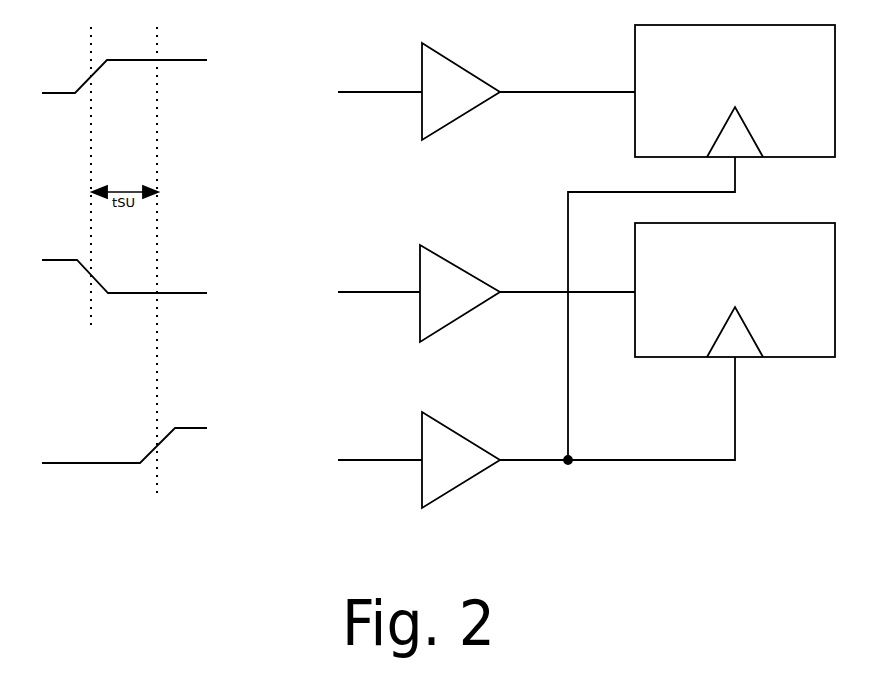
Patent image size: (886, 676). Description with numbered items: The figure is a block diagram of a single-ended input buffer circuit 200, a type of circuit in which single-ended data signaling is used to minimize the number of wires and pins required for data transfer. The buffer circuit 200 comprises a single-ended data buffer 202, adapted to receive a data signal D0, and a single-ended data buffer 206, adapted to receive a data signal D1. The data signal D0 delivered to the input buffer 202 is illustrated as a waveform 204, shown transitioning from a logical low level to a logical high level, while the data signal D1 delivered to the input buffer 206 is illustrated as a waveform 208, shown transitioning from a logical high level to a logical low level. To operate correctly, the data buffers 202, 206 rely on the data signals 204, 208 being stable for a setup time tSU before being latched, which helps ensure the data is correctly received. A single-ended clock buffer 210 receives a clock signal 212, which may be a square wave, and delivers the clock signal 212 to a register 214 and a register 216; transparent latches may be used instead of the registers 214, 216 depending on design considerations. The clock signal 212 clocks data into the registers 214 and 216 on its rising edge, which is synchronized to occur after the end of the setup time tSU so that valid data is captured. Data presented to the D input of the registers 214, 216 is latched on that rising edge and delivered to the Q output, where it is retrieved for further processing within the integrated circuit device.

The buffer circuit 200 is at (556, 290).
The single-ended data buffer 202 is at (461, 91).
The waveform 204 is at (58, 93).
The single-ended data buffer 206 is at (460, 293).
The waveform 208 is at (53, 260).
The single-ended clock buffer 210 is at (461, 460).
The clock signal 212 is at (55, 463).
The register 214 is at (735, 91).
The register 216 is at (735, 290).